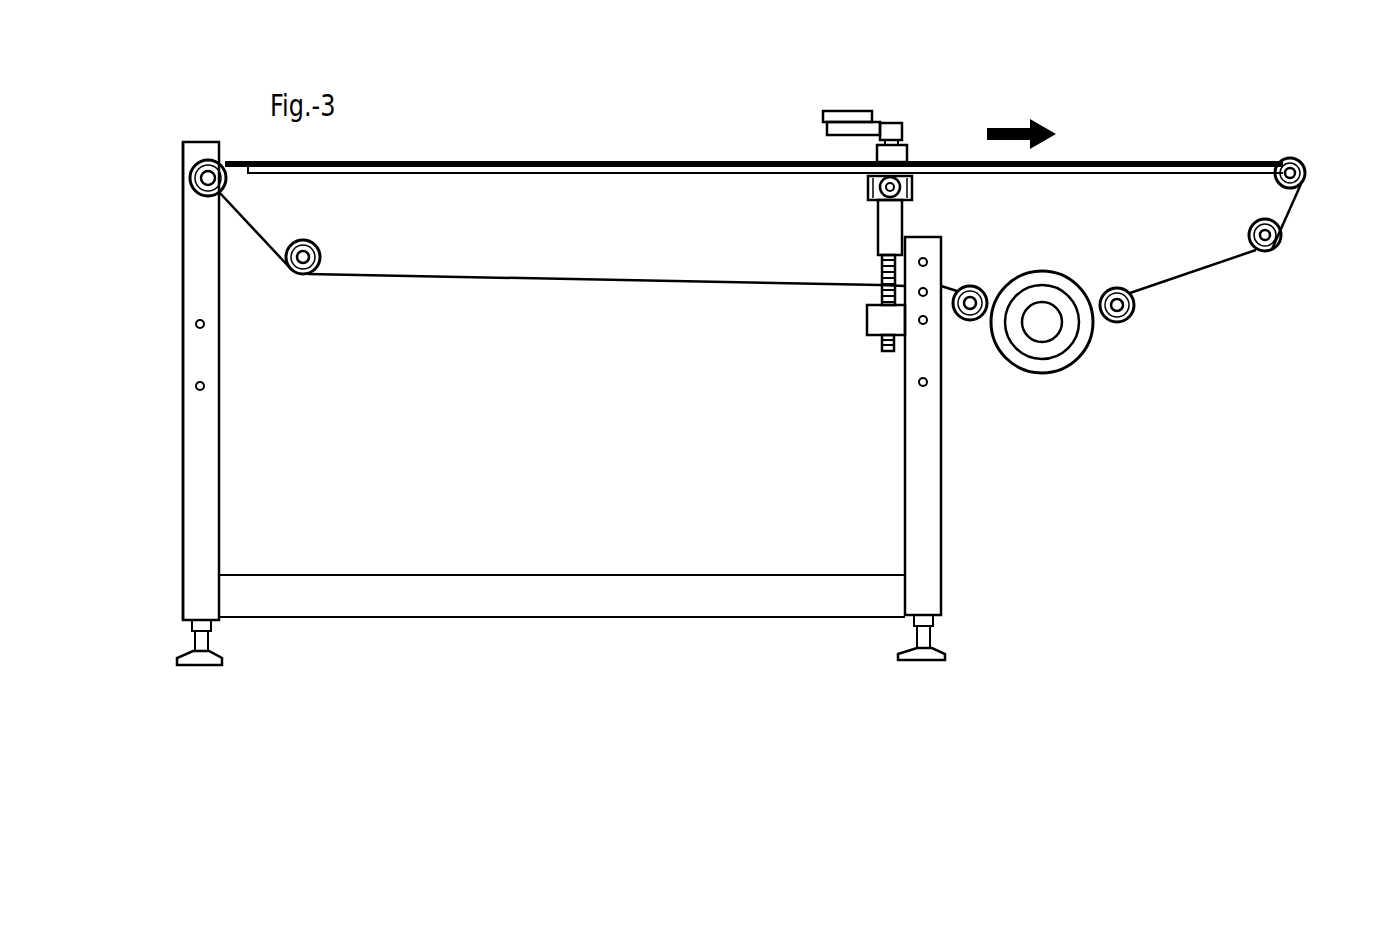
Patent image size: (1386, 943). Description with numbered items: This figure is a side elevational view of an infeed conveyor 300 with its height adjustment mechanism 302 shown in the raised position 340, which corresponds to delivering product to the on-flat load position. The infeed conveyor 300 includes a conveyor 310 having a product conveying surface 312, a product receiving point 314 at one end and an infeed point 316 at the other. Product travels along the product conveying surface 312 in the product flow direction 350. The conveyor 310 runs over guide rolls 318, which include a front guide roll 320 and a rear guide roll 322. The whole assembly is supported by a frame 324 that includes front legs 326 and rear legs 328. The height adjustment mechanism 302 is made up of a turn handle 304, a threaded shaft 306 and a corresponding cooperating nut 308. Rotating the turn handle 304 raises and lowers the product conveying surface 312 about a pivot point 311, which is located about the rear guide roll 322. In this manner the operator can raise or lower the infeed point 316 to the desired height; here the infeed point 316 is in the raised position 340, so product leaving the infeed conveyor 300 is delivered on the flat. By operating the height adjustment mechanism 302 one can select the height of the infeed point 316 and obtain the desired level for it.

The infeed conveyor 300 is at (980, 102).
The height adjustment mechanism 302 is at (835, 218).
The turn handle 304 is at (855, 112).
The threaded shaft 306 is at (880, 292).
The nut 308 is at (877, 323).
The conveyor 310 is at (483, 280).
The pivot point 311 is at (193, 188).
The product conveying surface 312 is at (383, 165).
The product receiving point 314 is at (206, 160).
The infeed point 316 is at (1292, 158).
The guide rolls 318 is at (1133, 318).
The front guide roll 320 is at (1298, 186).
The rear guide roll 322 is at (225, 185).
The frame 324 is at (473, 592).
The front legs 326 is at (923, 480).
The rear legs 328 is at (203, 527).
The raised position 340 is at (1273, 400).
The product flow direction 350 is at (1016, 125).